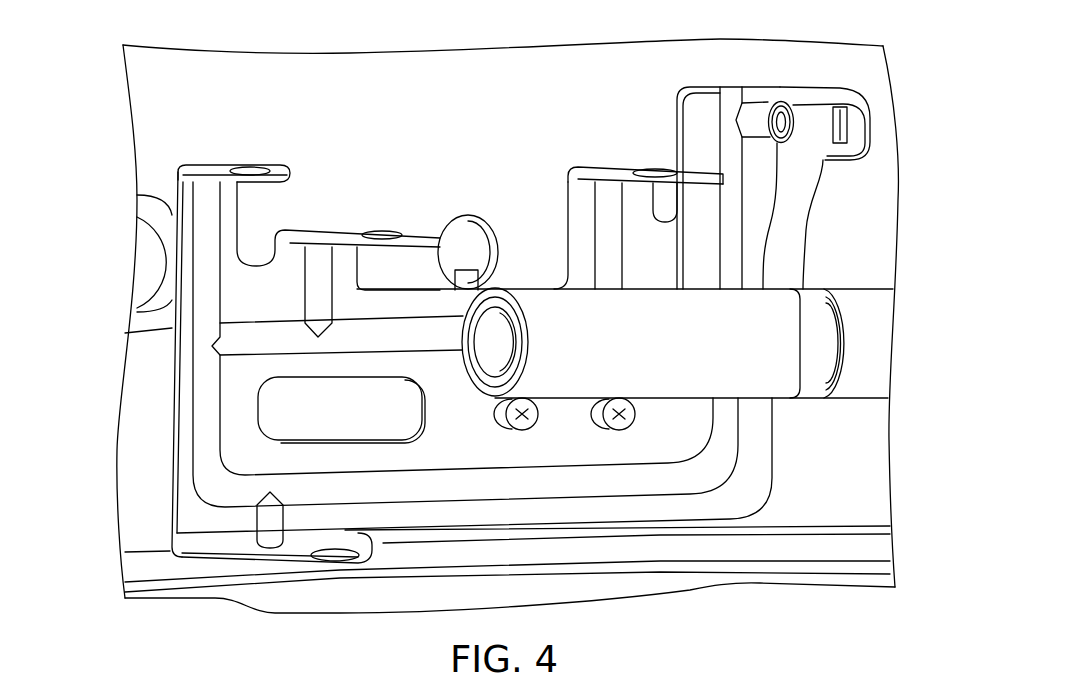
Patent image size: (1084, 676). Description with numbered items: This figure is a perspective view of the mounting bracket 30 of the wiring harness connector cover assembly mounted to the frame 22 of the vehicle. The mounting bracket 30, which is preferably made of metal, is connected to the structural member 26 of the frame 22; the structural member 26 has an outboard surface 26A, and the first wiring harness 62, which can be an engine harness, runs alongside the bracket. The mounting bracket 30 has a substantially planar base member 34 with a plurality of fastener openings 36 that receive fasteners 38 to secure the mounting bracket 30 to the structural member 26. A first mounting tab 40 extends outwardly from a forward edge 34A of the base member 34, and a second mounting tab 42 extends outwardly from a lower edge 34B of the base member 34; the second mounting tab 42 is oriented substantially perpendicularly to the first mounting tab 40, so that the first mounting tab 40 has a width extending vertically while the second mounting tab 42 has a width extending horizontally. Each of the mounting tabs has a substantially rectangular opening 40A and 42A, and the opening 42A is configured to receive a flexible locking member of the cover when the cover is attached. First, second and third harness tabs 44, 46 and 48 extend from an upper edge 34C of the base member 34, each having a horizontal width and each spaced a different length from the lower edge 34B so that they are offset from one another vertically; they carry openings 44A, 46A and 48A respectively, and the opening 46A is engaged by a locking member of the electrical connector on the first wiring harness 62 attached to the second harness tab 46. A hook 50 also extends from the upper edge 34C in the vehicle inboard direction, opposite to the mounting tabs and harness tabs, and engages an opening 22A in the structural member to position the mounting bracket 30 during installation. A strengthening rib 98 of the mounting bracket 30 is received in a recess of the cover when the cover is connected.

The frame 22 is at (126, 137).
The opening 22A is at (492, 222).
The structural member 26 is at (114, 489).
The outboard surface 26A is at (297, 90).
The mounting bracket 30 is at (162, 421).
The base member 34 is at (172, 378).
The forward edge 34A is at (773, 452).
The lower edge 34B is at (717, 520).
The upper edge 34C is at (732, 86).
The fastener openings 36 is at (492, 409).
The fasteners 38 is at (521, 420).
The first mounting tab 40 is at (815, 87).
The opening 40A is at (845, 124).
The second mounting tab 42 is at (293, 562).
The opening 42A is at (316, 548).
The first harness tab 44 is at (290, 176).
The opening 44A is at (246, 168).
The second harness tab 46 is at (340, 230).
The opening 46A is at (382, 232).
The third harness tab 48 is at (623, 168).
The opening 48A is at (653, 170).
The hook 50 is at (464, 268).
The first wiring harness 62 is at (852, 288).
The strengthening rib 98 is at (257, 517).